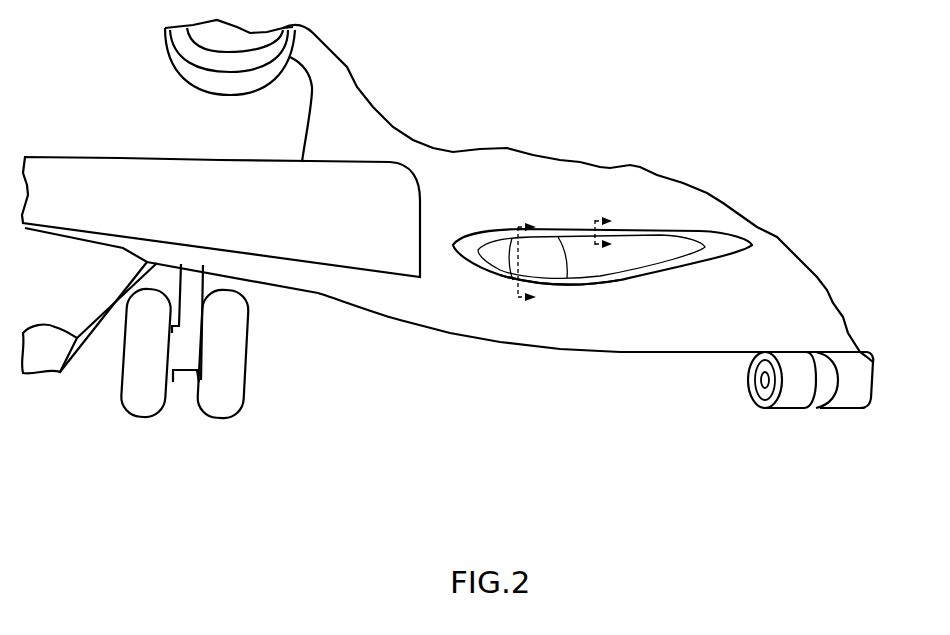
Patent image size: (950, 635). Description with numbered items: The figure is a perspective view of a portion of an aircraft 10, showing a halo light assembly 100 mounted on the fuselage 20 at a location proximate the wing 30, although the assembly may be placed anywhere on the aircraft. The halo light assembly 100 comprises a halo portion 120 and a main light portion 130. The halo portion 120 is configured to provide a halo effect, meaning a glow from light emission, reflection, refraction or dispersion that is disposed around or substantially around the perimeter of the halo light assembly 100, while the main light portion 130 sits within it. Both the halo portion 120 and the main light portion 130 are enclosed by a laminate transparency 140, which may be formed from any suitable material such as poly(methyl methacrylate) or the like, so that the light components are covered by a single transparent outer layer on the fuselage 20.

The aircraft 10 is at (496, 39).
The fuselage 20 is at (758, 329).
The wing 30 is at (347, 232).
The halo light assembly 100 is at (538, 197).
The halo portion 120 is at (577, 283).
The main light portion 130 is at (561, 264).
The laminate transparency 140 is at (682, 247).